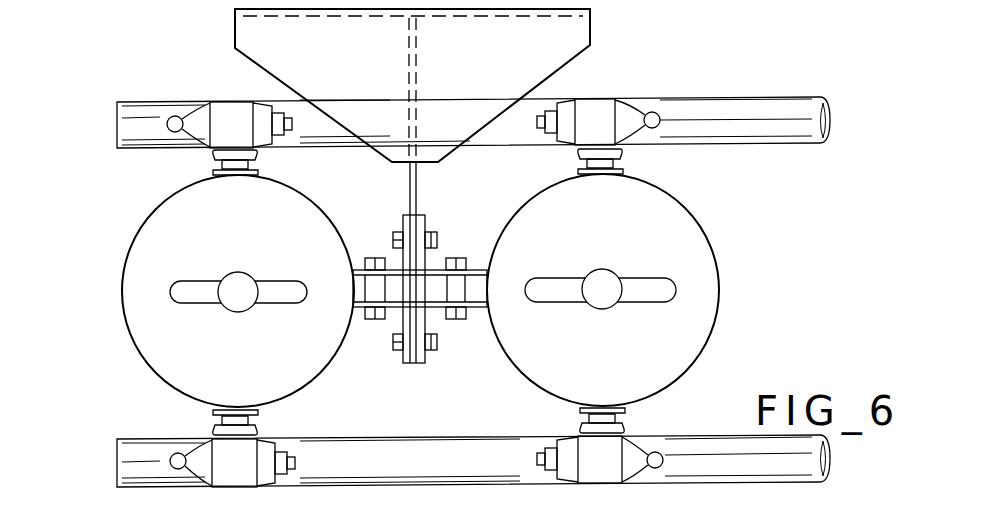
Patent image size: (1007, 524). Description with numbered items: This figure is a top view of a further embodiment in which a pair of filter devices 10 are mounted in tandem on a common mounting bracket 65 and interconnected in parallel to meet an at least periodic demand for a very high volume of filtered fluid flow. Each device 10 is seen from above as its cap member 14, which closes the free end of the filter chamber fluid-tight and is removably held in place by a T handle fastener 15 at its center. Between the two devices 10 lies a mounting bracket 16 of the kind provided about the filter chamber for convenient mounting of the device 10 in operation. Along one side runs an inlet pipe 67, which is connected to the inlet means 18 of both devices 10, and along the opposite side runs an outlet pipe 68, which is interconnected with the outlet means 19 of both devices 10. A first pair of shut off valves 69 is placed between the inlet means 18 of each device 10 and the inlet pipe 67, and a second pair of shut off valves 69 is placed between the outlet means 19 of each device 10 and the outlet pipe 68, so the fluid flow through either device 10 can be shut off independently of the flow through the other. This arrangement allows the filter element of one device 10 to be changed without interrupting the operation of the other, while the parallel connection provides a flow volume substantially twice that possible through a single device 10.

The device 10 is at (120, 229).
The cap member 14 is at (240, 240).
The T handle fastener 15 is at (251, 311).
The mounting bracket 16 is at (474, 268).
The inlet means 18 is at (262, 160).
The outlet means 19 is at (260, 420).
The common mounting bracket 65 is at (351, 74).
The inlet pipe 67 is at (528, 105).
The outlet pipe 68 is at (695, 443).
The shut off valve 69 is at (222, 108).